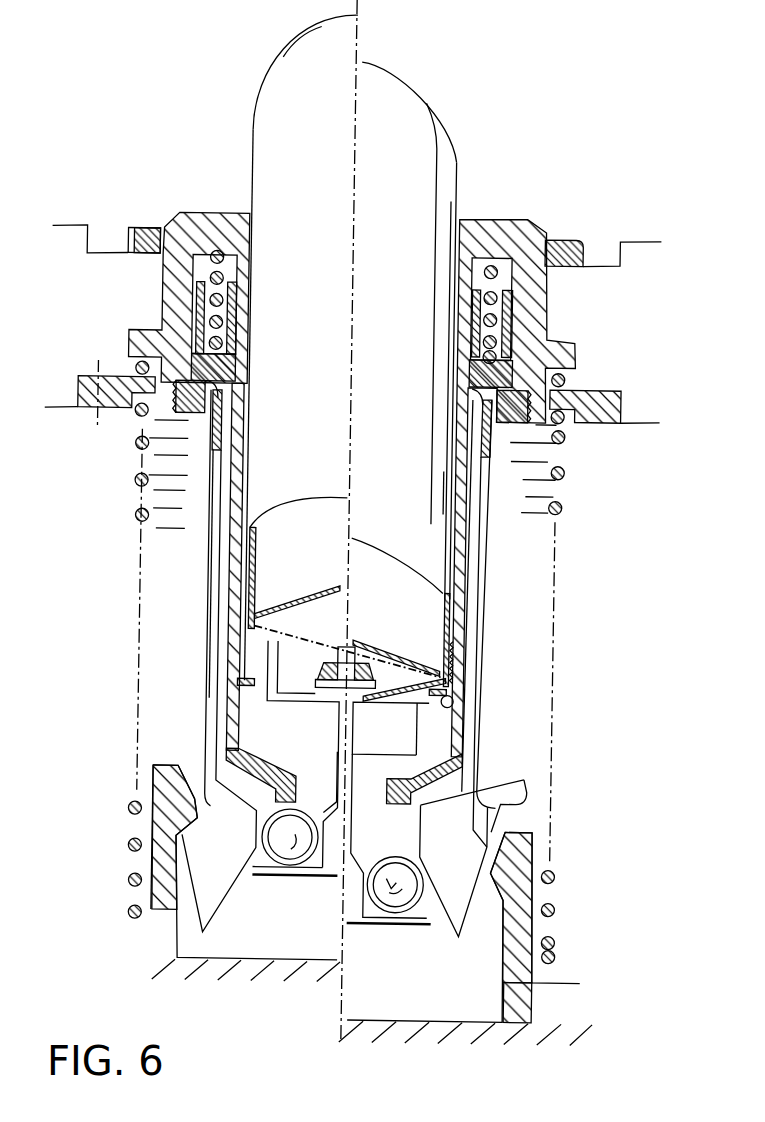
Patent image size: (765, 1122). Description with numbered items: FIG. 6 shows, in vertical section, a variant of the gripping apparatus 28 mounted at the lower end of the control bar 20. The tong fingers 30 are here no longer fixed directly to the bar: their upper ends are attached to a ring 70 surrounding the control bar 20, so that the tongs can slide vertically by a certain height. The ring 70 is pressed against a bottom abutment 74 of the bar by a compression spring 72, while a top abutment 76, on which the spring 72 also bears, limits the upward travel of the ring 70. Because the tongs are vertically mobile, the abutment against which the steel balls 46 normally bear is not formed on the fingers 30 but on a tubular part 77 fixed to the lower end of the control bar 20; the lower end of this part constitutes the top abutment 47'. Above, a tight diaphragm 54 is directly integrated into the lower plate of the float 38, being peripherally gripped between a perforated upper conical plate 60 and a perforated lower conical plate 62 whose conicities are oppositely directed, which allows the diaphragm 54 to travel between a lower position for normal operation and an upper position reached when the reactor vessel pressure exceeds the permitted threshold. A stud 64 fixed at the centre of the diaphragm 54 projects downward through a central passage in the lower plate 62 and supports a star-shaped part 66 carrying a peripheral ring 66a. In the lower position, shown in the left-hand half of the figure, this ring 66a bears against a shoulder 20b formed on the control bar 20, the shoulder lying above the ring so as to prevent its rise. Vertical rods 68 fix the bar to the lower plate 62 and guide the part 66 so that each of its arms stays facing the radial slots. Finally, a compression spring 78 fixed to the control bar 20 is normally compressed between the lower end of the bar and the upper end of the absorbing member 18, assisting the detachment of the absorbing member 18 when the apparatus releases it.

The absorbing member 18 is at (569, 993).
The control bar 20 is at (209, 230).
The shoulder 20b is at (242, 708).
The apparatus 28 is at (129, 616).
The fingers 30 is at (209, 480).
The float 38 is at (410, 147).
The steel balls 46 is at (398, 888).
The top abutment 47' is at (459, 858).
The diaphragm 54 is at (283, 630).
The upper conical plate 60 is at (341, 598).
The lower conical plate 62 is at (268, 656).
The stud 64 is at (344, 645).
The star-shaped part 66 is at (306, 689).
The ring 66a is at (466, 706).
The vertical rods 68 is at (424, 732).
The ring 70 is at (224, 373).
The compression spring 72 is at (219, 281).
The bottom abutment 74 is at (214, 403).
The top abutment 76 is at (468, 277).
The tubular part 77 is at (540, 779).
The compression spring 78 is at (131, 811).